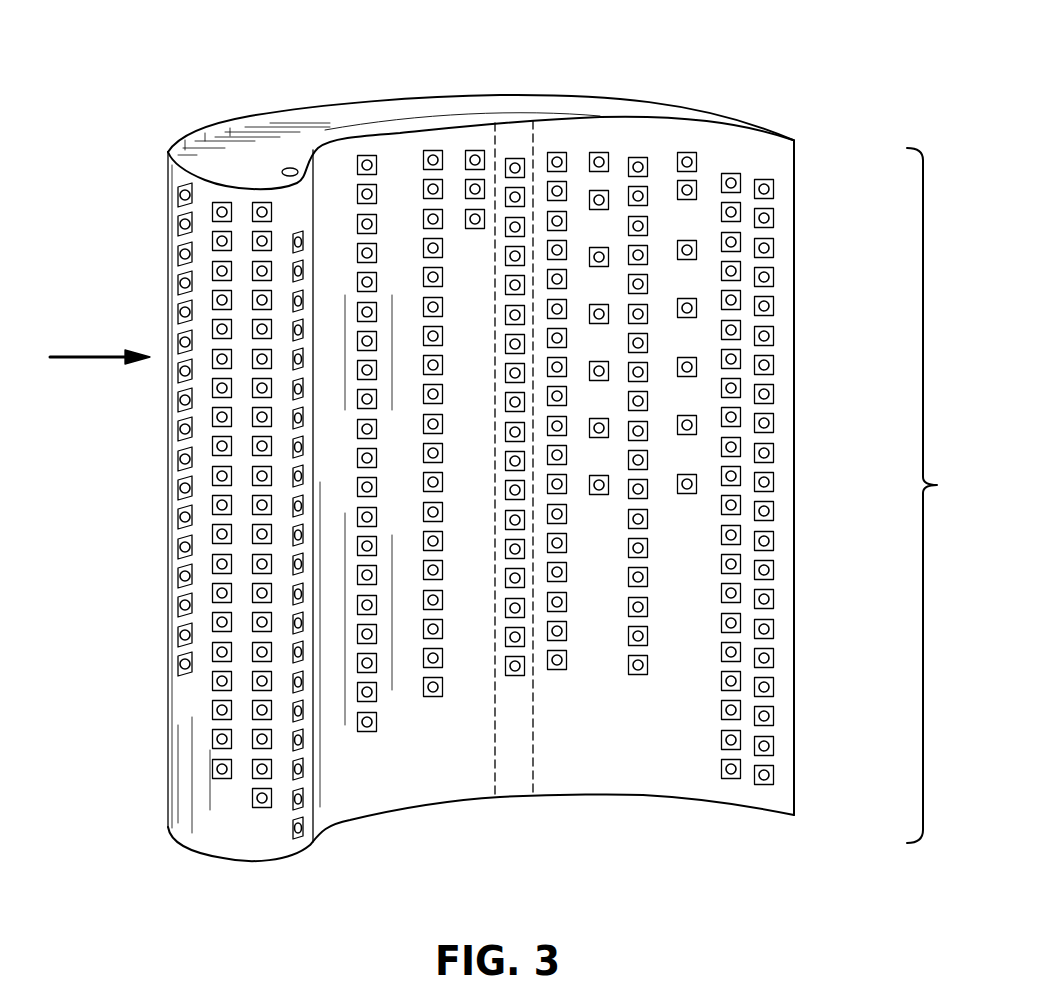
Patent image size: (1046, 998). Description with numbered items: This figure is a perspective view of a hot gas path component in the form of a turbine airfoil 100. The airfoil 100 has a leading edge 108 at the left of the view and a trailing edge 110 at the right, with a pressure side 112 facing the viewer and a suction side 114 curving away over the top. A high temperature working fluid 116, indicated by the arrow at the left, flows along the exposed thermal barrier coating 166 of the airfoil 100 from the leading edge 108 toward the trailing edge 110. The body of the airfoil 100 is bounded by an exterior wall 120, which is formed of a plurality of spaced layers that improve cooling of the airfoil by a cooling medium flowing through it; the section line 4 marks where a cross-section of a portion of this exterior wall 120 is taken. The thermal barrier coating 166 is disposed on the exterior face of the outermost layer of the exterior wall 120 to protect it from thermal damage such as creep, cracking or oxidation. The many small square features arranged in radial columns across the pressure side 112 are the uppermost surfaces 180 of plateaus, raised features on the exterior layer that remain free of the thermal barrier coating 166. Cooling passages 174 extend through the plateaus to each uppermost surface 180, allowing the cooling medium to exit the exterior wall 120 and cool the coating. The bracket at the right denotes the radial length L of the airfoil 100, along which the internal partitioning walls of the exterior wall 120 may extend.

The turbine airfoil 100 is at (128, 128).
The leading edge 108 is at (187, 842).
The trailing edge 110 is at (794, 771).
The pressure side 112 is at (637, 772).
The suction side 114 is at (557, 93).
The working fluid 116 is at (93, 357).
The exterior wall 120 is at (242, 117).
The thermal barrier coating 166 is at (470, 770).
The cooling passages 174 is at (788, 298).
The uppermost surface 180 is at (187, 593).
The section line 4- 4 is at (408, 198).
The radial length L is at (931, 495).